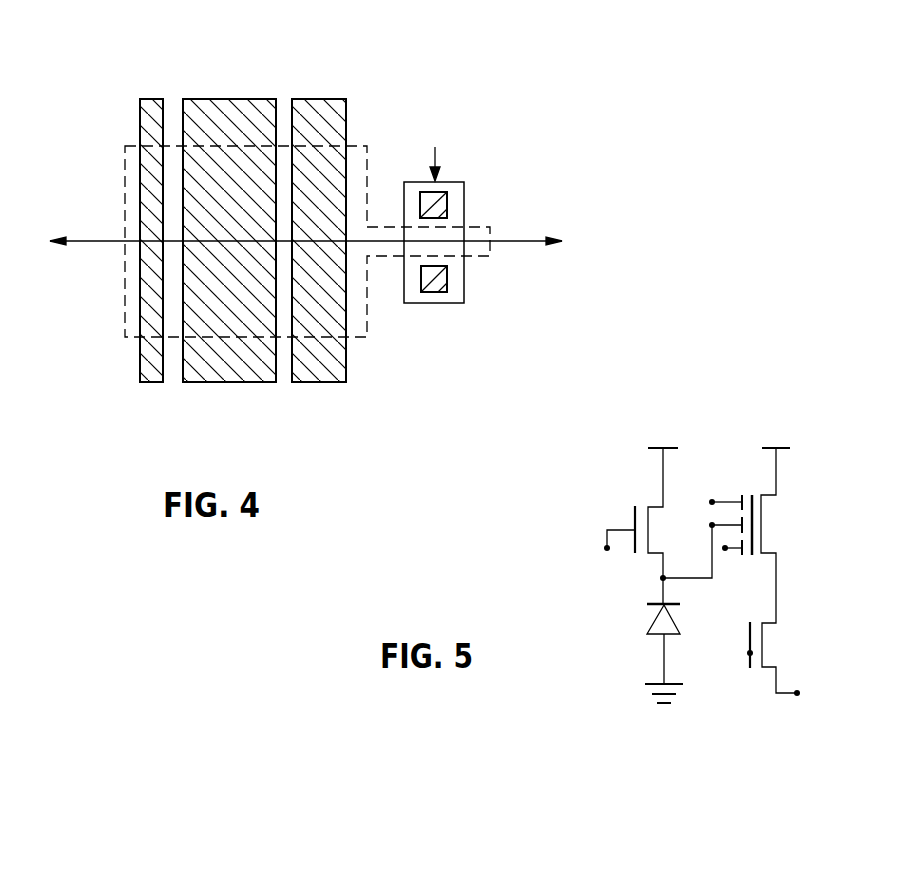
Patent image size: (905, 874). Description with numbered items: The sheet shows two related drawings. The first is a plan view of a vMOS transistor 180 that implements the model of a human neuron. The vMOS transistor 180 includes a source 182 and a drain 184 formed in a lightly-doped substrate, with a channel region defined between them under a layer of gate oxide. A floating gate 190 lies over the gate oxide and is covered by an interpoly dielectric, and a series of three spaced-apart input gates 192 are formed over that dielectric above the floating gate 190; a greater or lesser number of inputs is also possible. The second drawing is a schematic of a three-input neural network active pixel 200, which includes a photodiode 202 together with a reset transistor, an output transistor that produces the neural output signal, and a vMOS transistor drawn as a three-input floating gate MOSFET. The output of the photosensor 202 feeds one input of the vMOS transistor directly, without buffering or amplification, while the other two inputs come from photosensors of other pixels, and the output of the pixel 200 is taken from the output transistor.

In FIG. 4, the vMOS transistor 180 is at (304, 231).
In FIG. 4, the source region 182 is at (464, 193).
In FIG. 4, the drain region 184 is at (464, 287).
In FIG. 4, the floating gate 190 is at (125, 185).
In FIG. 4, the input gates 192 is at (300, 73).
In FIG. 5, the neural network active pixel 200 is at (685, 590).
In FIG. 5, the photodiode 202 is at (648, 625).